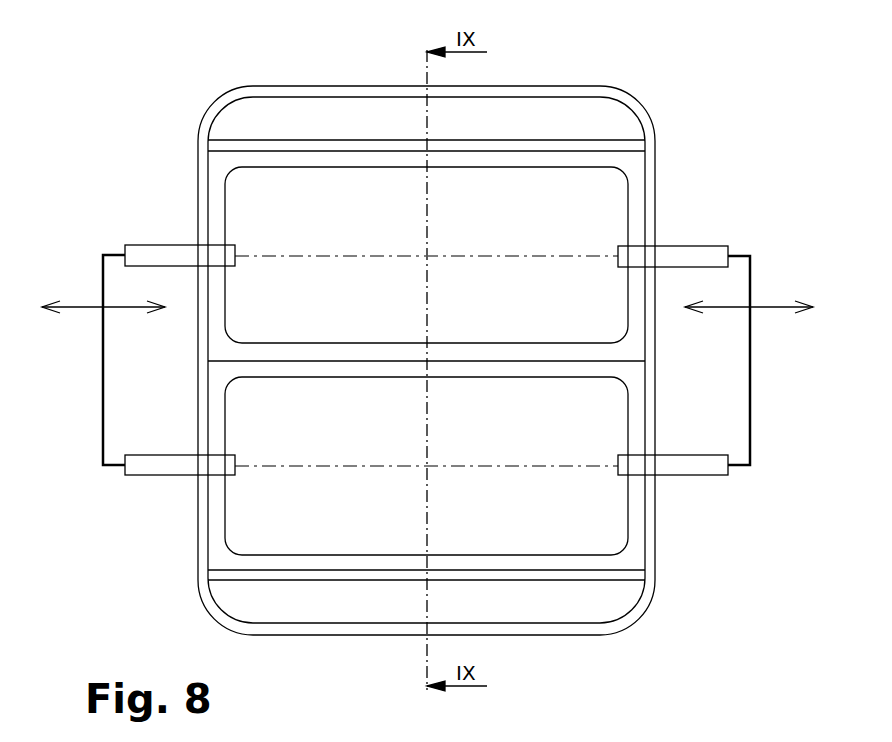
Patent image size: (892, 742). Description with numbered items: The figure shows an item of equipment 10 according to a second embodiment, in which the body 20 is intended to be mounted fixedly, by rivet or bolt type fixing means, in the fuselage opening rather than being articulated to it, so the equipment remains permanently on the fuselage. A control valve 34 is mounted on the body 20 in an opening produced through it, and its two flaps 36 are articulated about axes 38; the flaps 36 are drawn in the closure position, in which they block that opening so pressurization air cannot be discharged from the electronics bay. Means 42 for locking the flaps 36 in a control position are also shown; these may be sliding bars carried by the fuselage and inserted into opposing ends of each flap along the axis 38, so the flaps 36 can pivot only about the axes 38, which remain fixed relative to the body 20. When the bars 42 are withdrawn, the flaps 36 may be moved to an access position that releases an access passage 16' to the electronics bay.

The item of equipment 10 is at (184, 69).
The body 20 is at (290, 637).
The access passage 16' is at (426, 316).
The control valve 34 is at (542, 222).
The flaps 36 is at (612, 186).
The axes 38 is at (473, 257).
The means for locking the flaps 42 is at (698, 256).